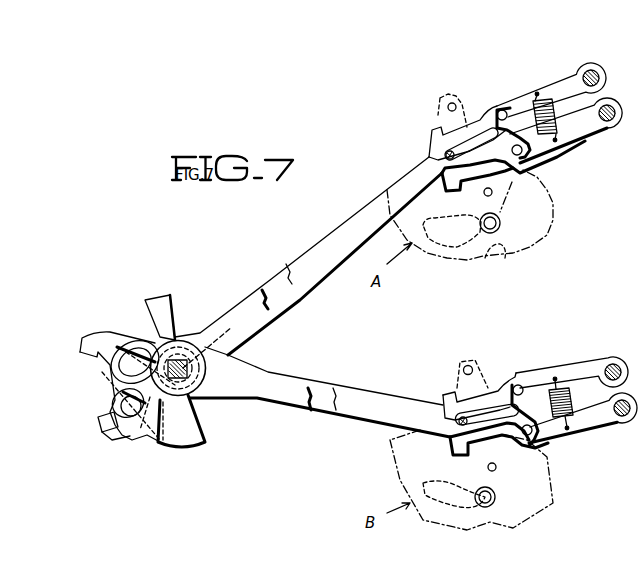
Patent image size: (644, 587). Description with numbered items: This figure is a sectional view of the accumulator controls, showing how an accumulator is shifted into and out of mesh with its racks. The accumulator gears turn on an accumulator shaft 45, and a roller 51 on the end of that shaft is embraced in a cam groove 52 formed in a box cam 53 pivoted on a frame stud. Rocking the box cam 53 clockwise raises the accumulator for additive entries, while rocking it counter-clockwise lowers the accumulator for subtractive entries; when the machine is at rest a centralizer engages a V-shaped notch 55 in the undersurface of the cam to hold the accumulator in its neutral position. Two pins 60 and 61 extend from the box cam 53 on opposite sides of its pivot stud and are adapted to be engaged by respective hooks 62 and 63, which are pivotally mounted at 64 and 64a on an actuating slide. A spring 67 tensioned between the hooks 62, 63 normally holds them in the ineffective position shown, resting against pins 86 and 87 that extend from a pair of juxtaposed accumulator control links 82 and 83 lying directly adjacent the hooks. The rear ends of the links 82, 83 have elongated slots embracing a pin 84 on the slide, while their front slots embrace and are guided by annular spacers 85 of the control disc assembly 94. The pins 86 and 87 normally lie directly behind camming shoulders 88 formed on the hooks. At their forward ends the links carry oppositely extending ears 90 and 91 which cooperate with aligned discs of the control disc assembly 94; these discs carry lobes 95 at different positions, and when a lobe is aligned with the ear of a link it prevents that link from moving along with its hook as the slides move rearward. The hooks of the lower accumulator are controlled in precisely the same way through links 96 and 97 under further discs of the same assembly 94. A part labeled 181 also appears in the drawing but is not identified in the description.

The accumulator shaft 45 is at (495, 228).
The roller 51 is at (482, 231).
The cam groove 52 is at (447, 242).
The box cam 53 is at (553, 215).
The V-shaped notch 55 is at (490, 258).
The pin 60 is at (452, 103).
The pin 61 is at (485, 195).
The hook 62 is at (553, 82).
The hook 63 is at (587, 137).
The pivot 64 is at (594, 72).
The pivot 64a is at (611, 120).
The spring 67 is at (553, 118).
The accumulator control link 82 is at (276, 282).
The accumulator control link 83 is at (285, 262).
The pin 84 is at (430, 150).
The annular spacers 85 is at (217, 339).
The pin 86 is at (502, 109).
The pin 87 is at (523, 154).
The camming shoulders 88 is at (518, 144).
The ear 90 is at (100, 423).
The ear 91 is at (113, 422).
The control disc assembly 94 is at (87, 383).
The lobes 95 is at (143, 303).
The link 96 is at (326, 392).
The link 97 is at (343, 408).
The shaft 181 is at (190, 377).